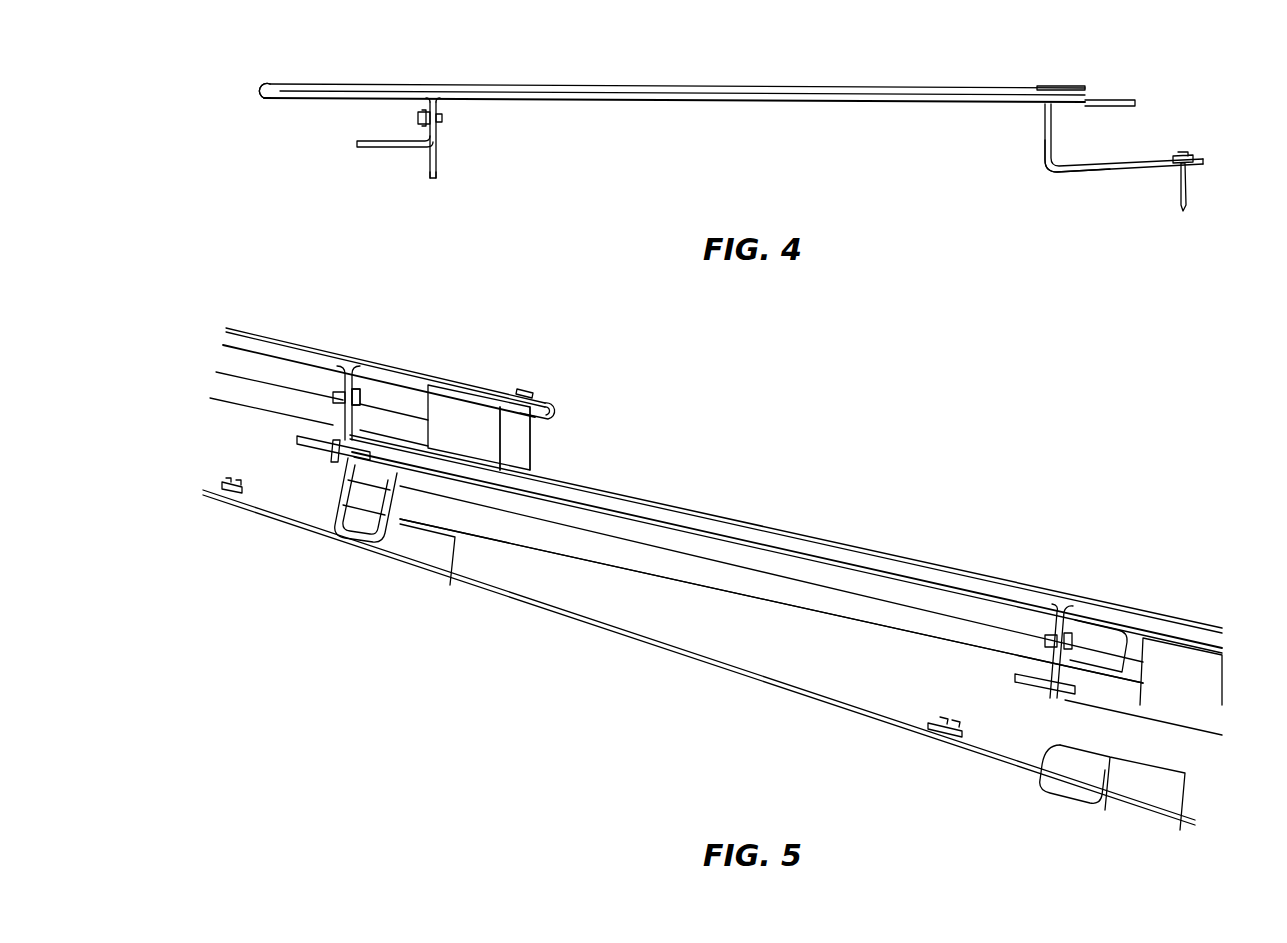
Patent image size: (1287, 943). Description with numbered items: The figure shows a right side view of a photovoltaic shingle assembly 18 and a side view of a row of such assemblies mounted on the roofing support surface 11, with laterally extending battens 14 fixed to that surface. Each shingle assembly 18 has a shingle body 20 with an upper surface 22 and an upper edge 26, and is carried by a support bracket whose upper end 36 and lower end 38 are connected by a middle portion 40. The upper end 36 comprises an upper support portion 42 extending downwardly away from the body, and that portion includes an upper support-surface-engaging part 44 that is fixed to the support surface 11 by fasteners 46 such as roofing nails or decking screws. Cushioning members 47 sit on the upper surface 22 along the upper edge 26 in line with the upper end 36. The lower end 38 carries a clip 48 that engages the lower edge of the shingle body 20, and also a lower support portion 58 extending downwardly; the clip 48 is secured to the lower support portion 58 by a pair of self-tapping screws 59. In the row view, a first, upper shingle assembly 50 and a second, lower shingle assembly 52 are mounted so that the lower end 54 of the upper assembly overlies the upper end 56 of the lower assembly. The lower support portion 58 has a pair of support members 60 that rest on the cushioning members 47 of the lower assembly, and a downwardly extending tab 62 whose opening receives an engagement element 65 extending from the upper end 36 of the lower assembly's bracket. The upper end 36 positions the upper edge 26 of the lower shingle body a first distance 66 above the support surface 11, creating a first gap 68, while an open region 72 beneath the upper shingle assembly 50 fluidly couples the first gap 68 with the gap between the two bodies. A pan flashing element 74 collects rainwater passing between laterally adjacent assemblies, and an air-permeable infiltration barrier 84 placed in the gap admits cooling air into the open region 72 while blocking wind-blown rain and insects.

In FIG. 5, the roofing support surface 11 is at (518, 597).
In FIG. 5, the battens 14 is at (408, 545).
In FIG. 4, the photovoltaic shingle assembly 18 is at (968, 20).
In FIG. 4, the shingle body 20 is at (760, 88).
In FIG. 5, the shingle body 20 is at (278, 336).
In FIG. 5, the upper surface 22 is at (355, 372).
In FIG. 5, the upper edge 26 is at (297, 438).
In FIG. 4, the upper end 36 is at (1155, 86).
In FIG. 4, the lower end 38 is at (300, 160).
In FIG. 4, the middle portion 40 is at (710, 102).
In FIG. 4, the upper support portion 42 is at (1008, 163).
In FIG. 4, the upper support-surface-engaging part 44 is at (1082, 172).
In FIG. 4, the fasteners 46 is at (1176, 190).
In FIG. 4, the cushioning members 47 is at (1048, 86).
In FIG. 4, the clip 48 is at (282, 98).
In FIG. 5, the first, upper shingle assembly 50 is at (418, 307).
In FIG. 5, the second, lower shingle assembly 52 is at (922, 509).
In FIG. 5, the lower end 54 is at (562, 383).
In FIG. 5, the upper end 56 is at (283, 458).
In FIG. 5, the lower support portion 58 is at (310, 402).
In FIG. 4, the self-tapping screws 59 is at (443, 118).
In FIG. 5, the self-tapping screws 59 is at (362, 397).
In FIG. 4, the support members 60 is at (385, 147).
In FIG. 4, the tab 62 is at (438, 167).
In FIG. 4, the engagement element 65 is at (1122, 106).
In FIG. 5, the first distance 66 is at (330, 520).
In FIG. 5, the first gap 68 is at (320, 481).
In FIG. 5, the open region 72 is at (822, 651).
In FIG. 5, the pan flashing element 74 is at (538, 438).
In FIG. 5, the air-permeable infiltration barrier 84 is at (462, 405).